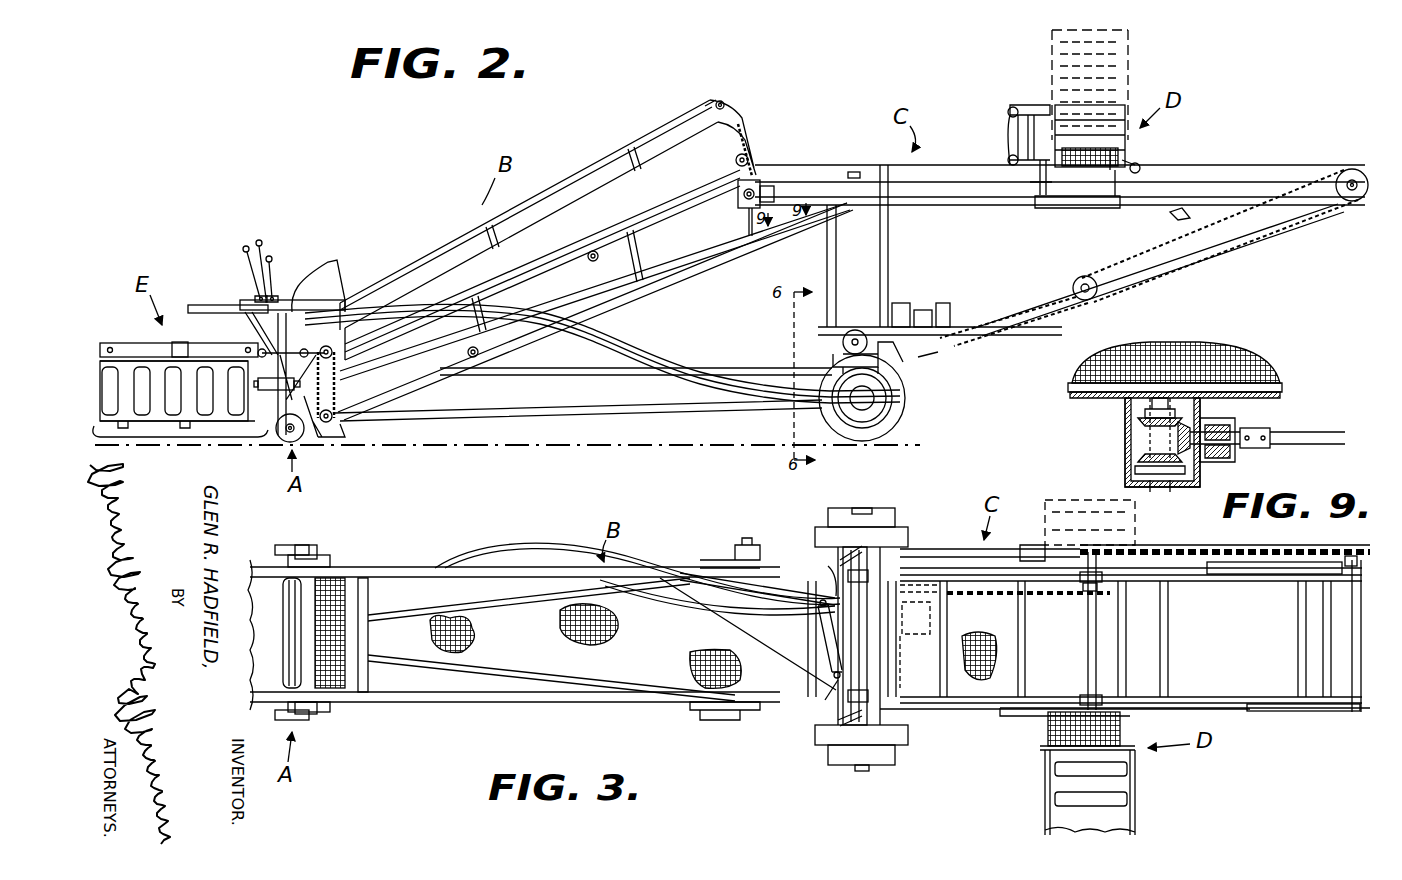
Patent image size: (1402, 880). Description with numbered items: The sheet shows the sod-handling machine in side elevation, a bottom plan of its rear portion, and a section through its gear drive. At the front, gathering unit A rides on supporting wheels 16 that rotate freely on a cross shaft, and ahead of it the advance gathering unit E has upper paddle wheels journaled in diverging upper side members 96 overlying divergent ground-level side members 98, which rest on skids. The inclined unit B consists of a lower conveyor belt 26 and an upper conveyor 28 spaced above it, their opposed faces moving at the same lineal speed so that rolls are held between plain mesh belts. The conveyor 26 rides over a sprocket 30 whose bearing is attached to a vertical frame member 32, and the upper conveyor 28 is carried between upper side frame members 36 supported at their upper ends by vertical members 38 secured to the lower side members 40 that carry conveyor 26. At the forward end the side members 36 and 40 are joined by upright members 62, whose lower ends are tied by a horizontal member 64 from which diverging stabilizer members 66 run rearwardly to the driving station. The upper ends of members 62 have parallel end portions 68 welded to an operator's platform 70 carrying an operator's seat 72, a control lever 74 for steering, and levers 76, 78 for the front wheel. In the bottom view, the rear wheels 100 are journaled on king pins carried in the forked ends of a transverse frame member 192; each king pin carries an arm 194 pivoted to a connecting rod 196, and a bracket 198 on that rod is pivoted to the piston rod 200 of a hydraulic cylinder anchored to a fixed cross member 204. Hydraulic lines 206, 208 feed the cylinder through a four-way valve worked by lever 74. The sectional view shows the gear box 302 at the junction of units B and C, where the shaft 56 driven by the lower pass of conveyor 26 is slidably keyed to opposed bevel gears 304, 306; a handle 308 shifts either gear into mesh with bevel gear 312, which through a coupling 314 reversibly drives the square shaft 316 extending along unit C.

In FIG. 2, the supporting wheel 16 is at (284, 443).
In FIG. 3, the supporting wheel 16 is at (300, 545).
In FIG. 3, the lower conveyor belt 26 is at (552, 646).
In FIG. 2, the upper conveyor 28 is at (500, 268).
In FIG. 2, the sprocket 30 is at (322, 440).
In FIG. 2, the vertical frame member 32 is at (318, 382).
In FIG. 2, the upper side frame members 36 is at (543, 198).
In FIG. 2, the vertical members 38 is at (715, 150).
In FIG. 2, the lower side members 40 is at (588, 250).
In FIG. 3, the lower side members 40 is at (630, 568).
In FIG. 9, the shaft 56 is at (1160, 343).
In FIG. 2, the upright members 62 is at (337, 362).
In FIG. 3, the horizontal member 64 is at (370, 598).
In FIG. 3, the diverging stabilizer members 66 is at (480, 604).
In FIG. 2, the parallel end portion 68 is at (250, 330).
In FIG. 2, the operator's platform 70 is at (203, 305).
In FIG. 2, the operator's seat 72 is at (330, 270).
In FIG. 2, the control lever 74 is at (244, 248).
In FIG. 2, the control lever 76 is at (262, 242).
In FIG. 2, the control lever 78 is at (274, 258).
In FIG. 2, the diverging upper side members 96 is at (150, 342).
In FIG. 2, the divergent lower side members 98 is at (140, 425).
In FIG. 2, the rear wheels 100 is at (908, 402).
In FIG. 3, the rear wheels 100 is at (908, 536).
In FIG. 3, the transverse frame member 192 is at (870, 652).
In FIG. 3, the arm 194 is at (845, 548).
In FIG. 3, the connecting rod 196 is at (830, 568).
In FIG. 3, the bracket 198 is at (826, 706).
In FIG. 3, the piston rod 200 is at (822, 636).
In FIG. 3, the fixed cross member 204 is at (812, 593).
In FIG. 2, the hydraulic line 206 is at (598, 340).
In FIG. 3, the hydraulic line 206 is at (665, 640).
In FIG. 2, the hydraulic line 208 is at (588, 344).
In FIG. 3, the hydraulic line 208 is at (690, 610).
In FIG. 2, the gear box 302 is at (740, 212).
In FIG. 9, the gear box 302 is at (1126, 428).
In FIG. 9, the bevel gear 304 is at (1140, 420).
In FIG. 9, the bevel gear 306 is at (1140, 460).
In FIG. 2, the handle 308 is at (753, 232).
In FIG. 9, the bevel gear 312 is at (1190, 425).
In FIG. 9, the coupling 314 is at (1255, 448).
In FIG. 2, the square shaft 316 is at (908, 200).
In FIG. 9, the square shaft 316 is at (1312, 423).